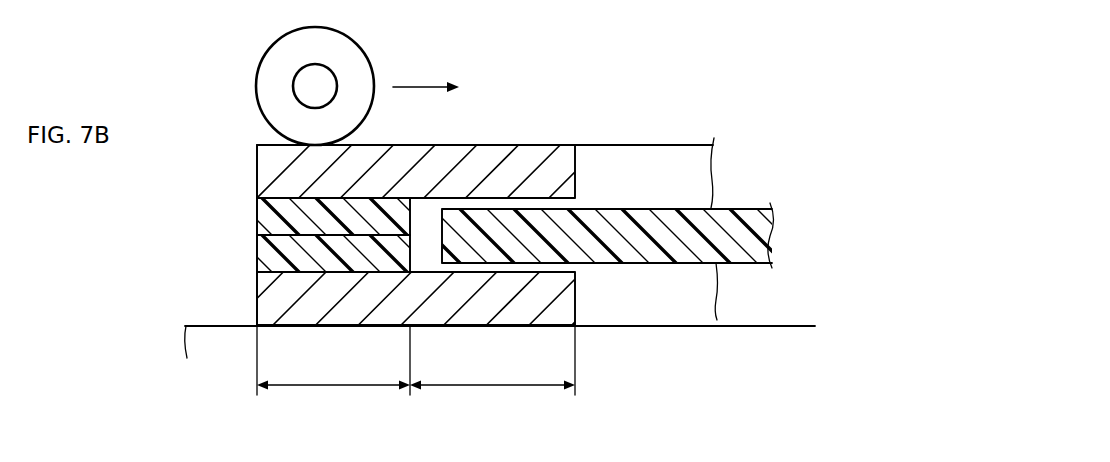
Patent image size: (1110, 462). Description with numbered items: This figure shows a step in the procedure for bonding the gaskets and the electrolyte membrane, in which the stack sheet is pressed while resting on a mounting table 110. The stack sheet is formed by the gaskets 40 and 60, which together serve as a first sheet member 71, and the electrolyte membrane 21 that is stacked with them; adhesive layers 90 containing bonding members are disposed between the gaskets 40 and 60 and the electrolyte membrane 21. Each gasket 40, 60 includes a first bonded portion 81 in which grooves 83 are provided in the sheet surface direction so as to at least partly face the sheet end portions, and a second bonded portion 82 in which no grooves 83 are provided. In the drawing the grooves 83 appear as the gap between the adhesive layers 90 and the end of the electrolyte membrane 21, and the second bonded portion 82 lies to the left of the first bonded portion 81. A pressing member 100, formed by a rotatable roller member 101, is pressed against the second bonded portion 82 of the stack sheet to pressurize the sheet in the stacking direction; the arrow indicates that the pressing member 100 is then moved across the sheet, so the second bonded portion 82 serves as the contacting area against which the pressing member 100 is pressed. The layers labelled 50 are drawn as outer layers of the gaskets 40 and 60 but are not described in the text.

The pressing member 100 is at (212, 11).
The rotatable roller member 101 is at (275, 58).
The mounting table 110 is at (814, 330).
The first sheet member 71 is at (126, 200).
The gasket 60 is at (176, 152).
The gasket 40 is at (176, 237).
The base film 50 is at (268, 166).
The adhesive layer 90 is at (250, 204).
The electrolyte membrane 21 is at (748, 208).
The groove 83 is at (432, 207).
The second bonded portion 82 is at (333, 388).
The first bonded portion 81 is at (500, 388).